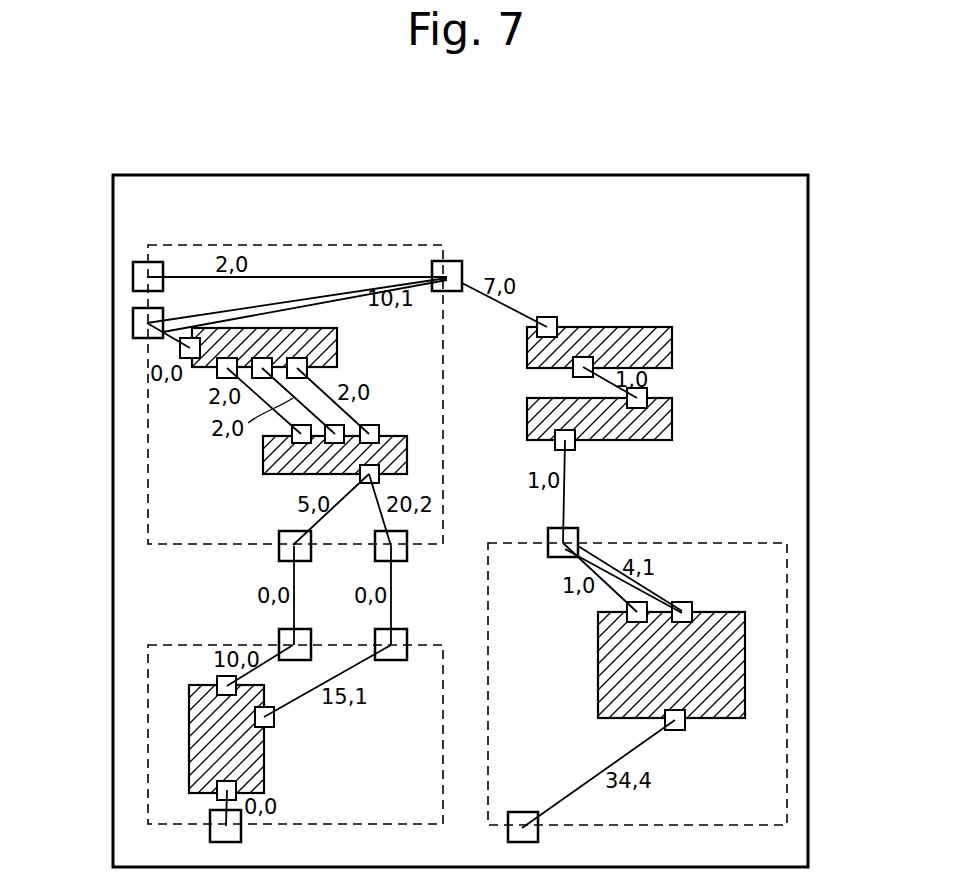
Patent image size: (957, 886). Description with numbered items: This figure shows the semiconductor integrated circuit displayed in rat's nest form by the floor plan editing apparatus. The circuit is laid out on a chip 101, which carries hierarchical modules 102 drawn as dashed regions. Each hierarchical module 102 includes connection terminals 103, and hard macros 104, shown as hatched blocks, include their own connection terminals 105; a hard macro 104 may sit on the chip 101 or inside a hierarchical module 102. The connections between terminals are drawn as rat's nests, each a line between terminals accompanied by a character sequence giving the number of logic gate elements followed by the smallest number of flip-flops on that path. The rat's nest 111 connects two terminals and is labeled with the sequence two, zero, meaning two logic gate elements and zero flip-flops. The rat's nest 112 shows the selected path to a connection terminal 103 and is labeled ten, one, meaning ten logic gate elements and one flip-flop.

The chip 101 is at (668, 174).
The hierarchical module 102 is at (148, 465).
The connection terminal 103 is at (456, 260).
The hard macro 104 is at (676, 350).
The connection terminal 105 is at (549, 316).
The rat's nest 111 is at (312, 276).
The rat's nest 112 is at (335, 298).